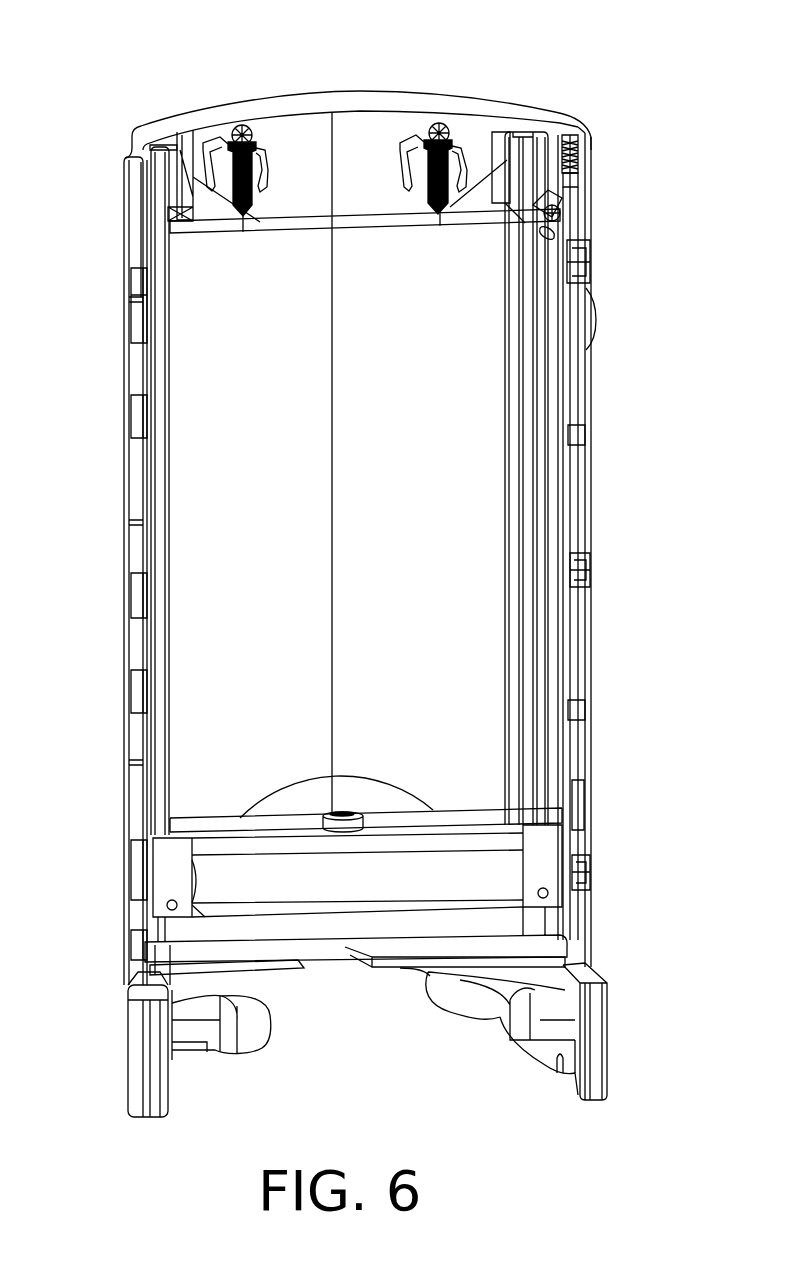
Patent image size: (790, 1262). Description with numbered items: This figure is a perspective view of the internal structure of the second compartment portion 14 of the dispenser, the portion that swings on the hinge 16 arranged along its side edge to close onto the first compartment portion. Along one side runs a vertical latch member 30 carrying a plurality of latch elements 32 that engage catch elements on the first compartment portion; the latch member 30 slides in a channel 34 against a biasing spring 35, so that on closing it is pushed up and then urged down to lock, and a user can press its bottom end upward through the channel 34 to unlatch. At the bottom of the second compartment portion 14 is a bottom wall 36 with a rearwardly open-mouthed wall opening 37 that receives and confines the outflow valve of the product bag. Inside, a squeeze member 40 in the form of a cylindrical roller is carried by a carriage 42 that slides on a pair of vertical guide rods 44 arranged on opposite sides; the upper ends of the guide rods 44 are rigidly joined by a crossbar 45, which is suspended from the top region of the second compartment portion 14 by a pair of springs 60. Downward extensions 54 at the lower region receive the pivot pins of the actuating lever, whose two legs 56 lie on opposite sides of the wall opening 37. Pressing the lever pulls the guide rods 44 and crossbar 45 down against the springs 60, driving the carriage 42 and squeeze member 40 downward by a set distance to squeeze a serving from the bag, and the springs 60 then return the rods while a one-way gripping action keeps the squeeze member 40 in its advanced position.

The second compartment portion 14 is at (522, 68).
The hinge 16 is at (130, 492).
The latch member 30 is at (575, 398).
The latch elements 32 is at (590, 275).
The channel 34 is at (580, 825).
The biasing spring 35 is at (580, 160).
The bottom wall 36 is at (395, 967).
The wall opening 37 is at (300, 968).
The squeeze member 40 is at (385, 889).
The carriage 42 is at (470, 808).
The guide rods 44 is at (165, 403).
The crossbar 45 is at (305, 225).
The downward extensions 54 is at (130, 1045).
The legs 56 is at (250, 1045).
The springs 60 is at (272, 170).